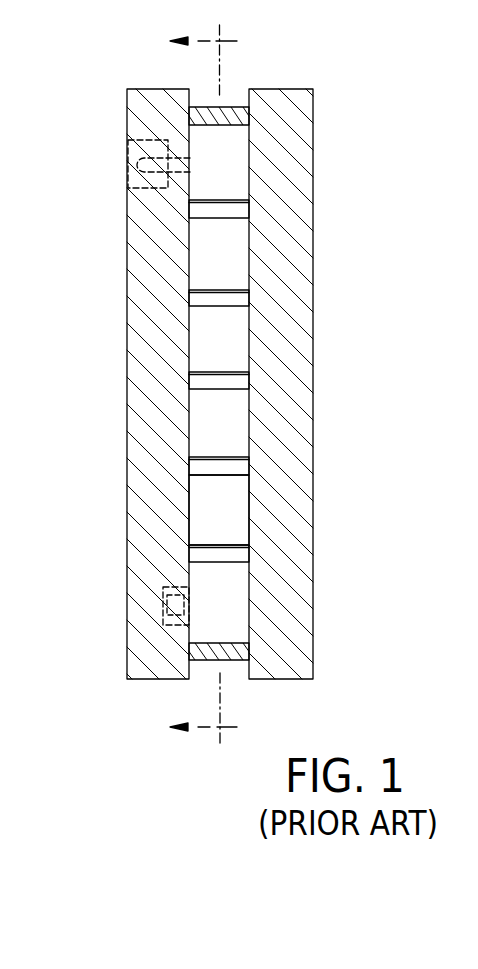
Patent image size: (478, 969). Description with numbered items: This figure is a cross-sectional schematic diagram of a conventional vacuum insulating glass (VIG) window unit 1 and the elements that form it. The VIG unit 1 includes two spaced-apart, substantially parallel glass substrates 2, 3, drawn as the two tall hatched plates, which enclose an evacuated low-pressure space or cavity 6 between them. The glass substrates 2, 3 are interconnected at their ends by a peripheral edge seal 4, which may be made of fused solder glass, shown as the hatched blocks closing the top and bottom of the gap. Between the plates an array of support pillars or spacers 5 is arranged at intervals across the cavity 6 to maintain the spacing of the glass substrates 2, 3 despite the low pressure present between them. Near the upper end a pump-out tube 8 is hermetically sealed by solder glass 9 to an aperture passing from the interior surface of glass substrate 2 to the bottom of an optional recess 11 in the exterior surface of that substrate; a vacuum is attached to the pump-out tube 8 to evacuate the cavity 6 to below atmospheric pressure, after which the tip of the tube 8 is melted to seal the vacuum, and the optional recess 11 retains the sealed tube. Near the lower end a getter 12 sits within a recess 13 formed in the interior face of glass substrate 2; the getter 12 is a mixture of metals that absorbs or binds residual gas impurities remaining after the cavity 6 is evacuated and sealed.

The VIG window unit 1 is at (237, 388).
The glass substrate 2 is at (127, 432).
The glass substrate 3 is at (285, 318).
The peripheral edge seal 4 is at (230, 113).
The support pillars/spacers 5 is at (225, 383).
The low-pressure space/cavity 6 is at (205, 498).
The pump-out tube 8 is at (135, 165).
The solder glass 9 is at (157, 151).
The recess 11 is at (140, 190).
The getter 12 is at (165, 602).
The recess 13 is at (161, 639).